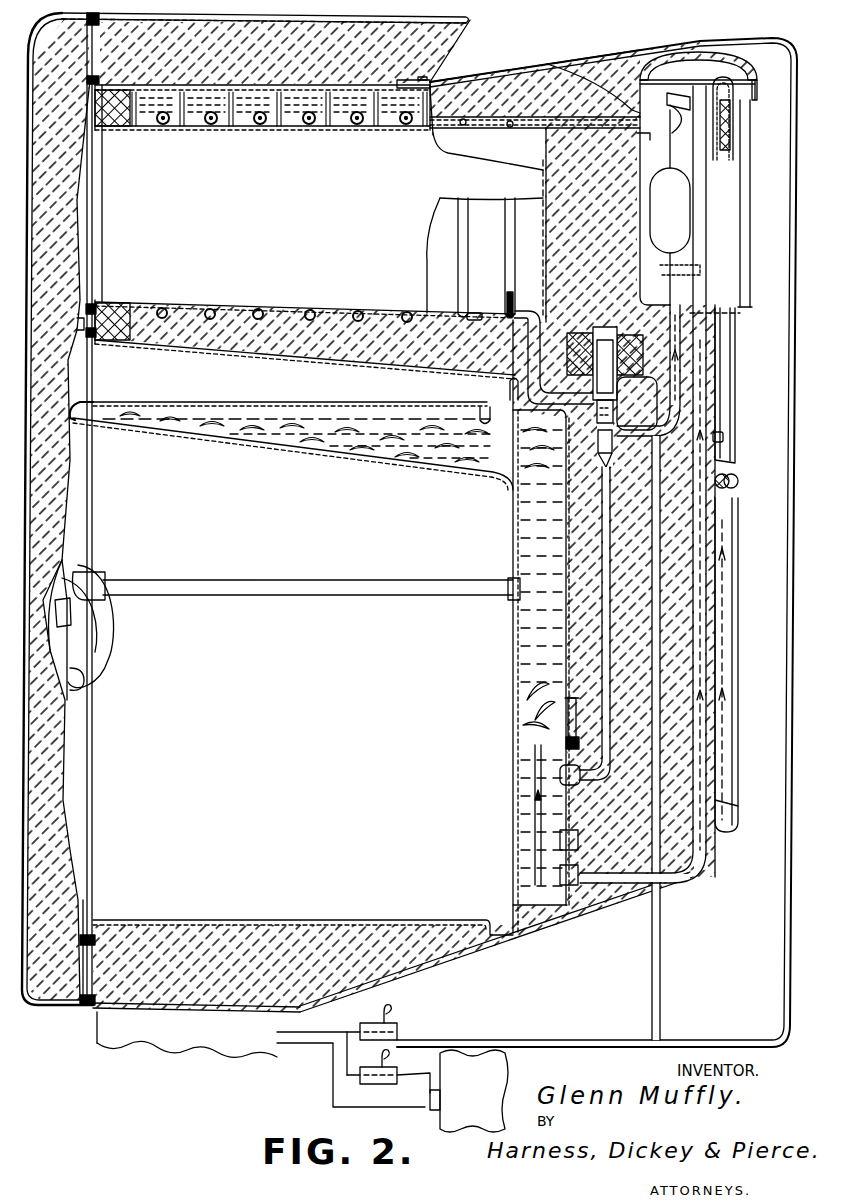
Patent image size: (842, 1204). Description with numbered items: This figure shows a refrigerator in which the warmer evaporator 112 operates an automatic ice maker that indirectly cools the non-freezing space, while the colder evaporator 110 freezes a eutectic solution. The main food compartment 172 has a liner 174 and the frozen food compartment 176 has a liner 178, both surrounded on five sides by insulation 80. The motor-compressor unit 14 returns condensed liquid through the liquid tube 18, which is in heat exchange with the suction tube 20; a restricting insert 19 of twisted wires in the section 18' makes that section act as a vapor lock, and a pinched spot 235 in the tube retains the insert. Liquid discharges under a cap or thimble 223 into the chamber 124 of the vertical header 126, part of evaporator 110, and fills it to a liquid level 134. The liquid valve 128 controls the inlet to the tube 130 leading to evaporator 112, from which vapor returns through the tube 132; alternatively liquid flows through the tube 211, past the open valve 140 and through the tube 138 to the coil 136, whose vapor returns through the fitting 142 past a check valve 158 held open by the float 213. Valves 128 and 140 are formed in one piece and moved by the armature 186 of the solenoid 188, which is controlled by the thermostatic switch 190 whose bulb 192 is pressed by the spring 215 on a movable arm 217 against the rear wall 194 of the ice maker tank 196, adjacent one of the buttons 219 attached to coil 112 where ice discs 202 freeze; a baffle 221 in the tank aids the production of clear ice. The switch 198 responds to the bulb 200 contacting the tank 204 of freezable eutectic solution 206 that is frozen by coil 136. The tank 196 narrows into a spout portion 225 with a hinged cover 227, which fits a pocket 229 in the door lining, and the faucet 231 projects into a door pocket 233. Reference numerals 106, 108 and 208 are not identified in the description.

The motor-compressor unit 14 is at (469, 1091).
The liquid tube 18 is at (740, 570).
The vapor-lock section of liquid tube 18' is at (751, 133).
The restricting insert 19 is at (757, 88).
The suction tube 20 is at (739, 481).
The insulation 80 is at (404, 516).
The cabinet 106 is at (597, 529).
The door 108 is at (80, 40).
The colder evaporator 110 is at (530, 45).
The warmer evaporator 112 is at (575, 845).
The chamber 124 is at (697, 74).
The vertical header 126 is at (547, 64).
The liquid valve 128 is at (540, 658).
The tube 130 is at (604, 658).
The vapor return tube 132 is at (700, 878).
The liquid level 134 is at (708, 230).
The evaporator coil 136 is at (431, 87).
The tube 138 is at (508, 381).
The valve 140 is at (562, 428).
The fitting 142 is at (660, 142).
The check valve 158 is at (668, 97).
The main food compartment 172 is at (303, 812).
The liner 174 is at (263, 361).
The frozen food compartment 176 is at (324, 203).
The liner 178 is at (295, 307).
The armature 186 is at (601, 333).
The solenoid 188 is at (577, 333).
The thermostatic switch 190 is at (389, 1006).
The bulb 192 is at (566, 743).
The rear wall 194 is at (572, 575).
The ice maker tank 196 is at (516, 546).
The switch 198 is at (358, 1083).
The bulb 200 is at (347, 82).
The ice discs 202 is at (392, 450).
The tank 204 is at (231, 88).
The freezable solution 206 is at (196, 93).
The block 208 is at (165, 128).
The tube 211 is at (681, 418).
The float 213 is at (675, 236).
The spring 215 is at (578, 720).
The movable arm 217 is at (573, 700).
The buttons 219 is at (563, 788).
The baffle 221 is at (570, 877).
The cap or thimble 223 is at (728, 82).
The spout portion 225 is at (130, 428).
The hinged cover 227 is at (113, 401).
The pocket 229 is at (78, 378).
The faucet 231 is at (80, 574).
The pocket 233 is at (57, 651).
The tube distortion 235 is at (724, 436).